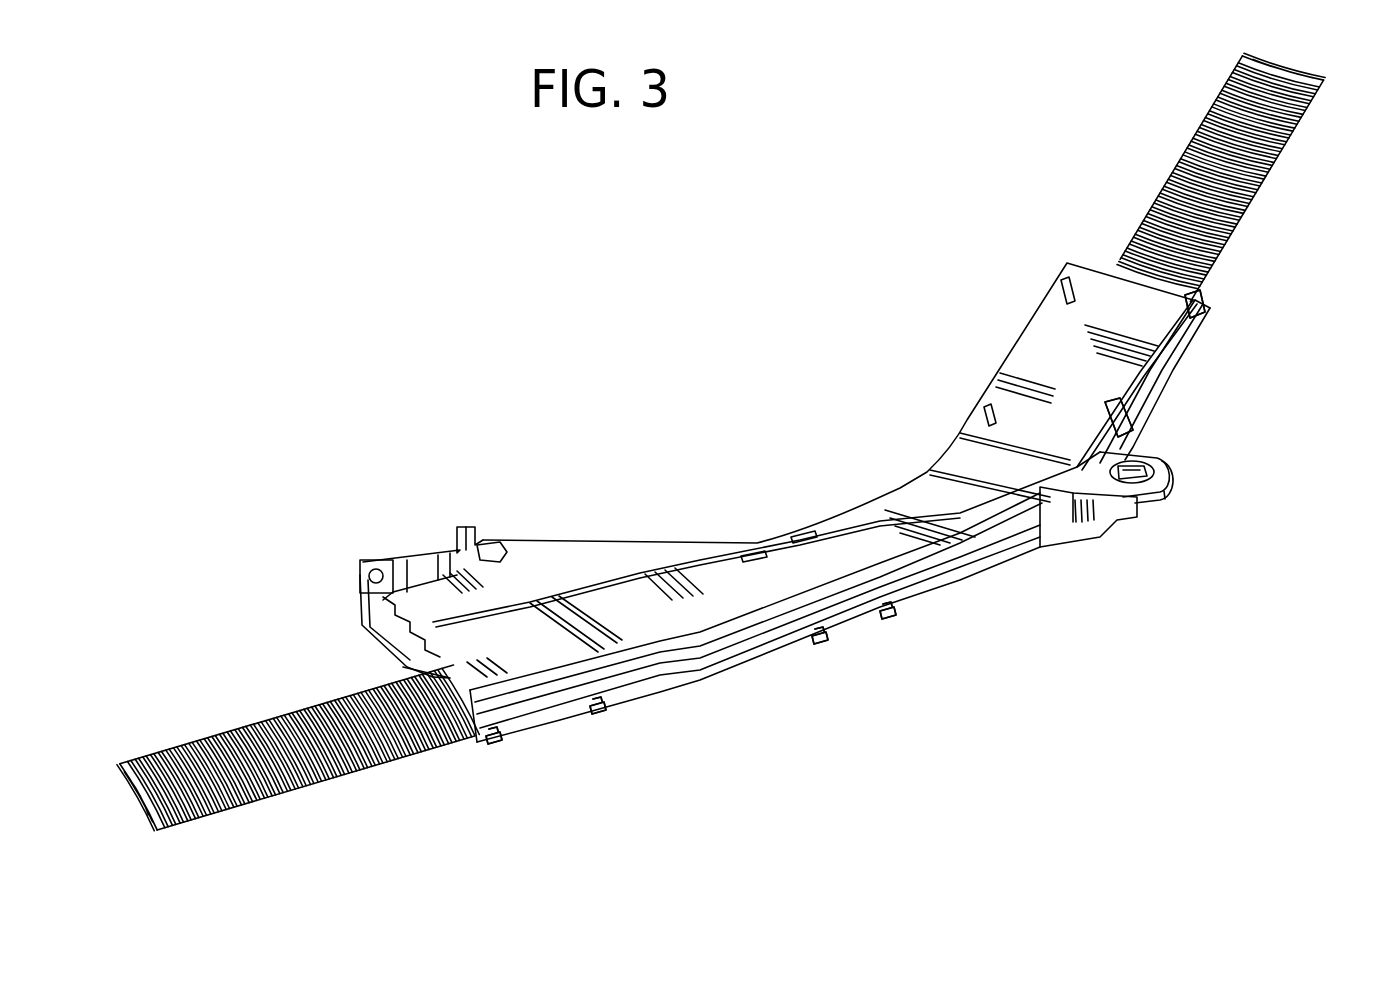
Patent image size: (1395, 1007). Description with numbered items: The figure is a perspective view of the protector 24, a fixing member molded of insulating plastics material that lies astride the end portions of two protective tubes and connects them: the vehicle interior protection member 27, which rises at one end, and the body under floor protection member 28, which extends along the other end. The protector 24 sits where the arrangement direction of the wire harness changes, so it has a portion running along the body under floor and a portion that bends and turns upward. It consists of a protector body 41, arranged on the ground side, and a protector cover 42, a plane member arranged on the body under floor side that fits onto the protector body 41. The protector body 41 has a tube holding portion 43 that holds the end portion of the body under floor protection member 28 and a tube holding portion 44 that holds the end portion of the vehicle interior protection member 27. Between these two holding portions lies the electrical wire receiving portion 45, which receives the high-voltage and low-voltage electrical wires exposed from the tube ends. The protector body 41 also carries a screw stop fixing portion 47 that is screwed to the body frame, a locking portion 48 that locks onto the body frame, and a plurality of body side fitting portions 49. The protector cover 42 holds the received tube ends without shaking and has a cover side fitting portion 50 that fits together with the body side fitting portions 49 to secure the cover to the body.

The protector 24 is at (868, 477).
The vehicle interior protection member 27 is at (1207, 130).
The body under floor protection member 28 is at (200, 738).
The protector body 41 is at (660, 680).
The protector cover 42 is at (708, 573).
The tube holding portion 43 is at (545, 707).
The tube holding portion 44 is at (1163, 390).
The electrical wire receiving portion 45 is at (752, 655).
The screw stop fixing portion 47 is at (1174, 465).
The locking portion 48 is at (422, 567).
The body side fitting portions 49 is at (493, 733).
The cover side fitting portion 50 is at (845, 517).